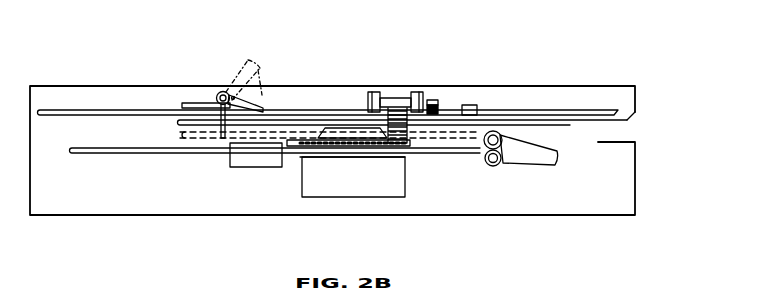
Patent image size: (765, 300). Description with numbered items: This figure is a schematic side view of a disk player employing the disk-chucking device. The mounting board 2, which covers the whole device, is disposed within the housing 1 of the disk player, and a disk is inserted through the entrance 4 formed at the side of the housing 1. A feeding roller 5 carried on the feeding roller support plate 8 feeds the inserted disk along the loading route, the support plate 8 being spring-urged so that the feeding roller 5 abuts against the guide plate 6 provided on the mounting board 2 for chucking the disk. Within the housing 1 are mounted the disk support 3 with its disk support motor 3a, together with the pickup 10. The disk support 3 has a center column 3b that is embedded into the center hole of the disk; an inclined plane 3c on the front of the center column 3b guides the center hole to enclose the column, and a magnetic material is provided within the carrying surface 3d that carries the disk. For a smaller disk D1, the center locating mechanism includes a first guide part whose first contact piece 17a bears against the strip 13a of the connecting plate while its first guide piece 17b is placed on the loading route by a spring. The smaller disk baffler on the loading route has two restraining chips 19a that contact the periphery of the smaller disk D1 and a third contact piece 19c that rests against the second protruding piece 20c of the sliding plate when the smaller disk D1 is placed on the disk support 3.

The housing 1 is at (636, 197).
The mounting board 2 is at (101, 110).
The disk support 3 is at (291, 144).
The disk support motor 3a is at (393, 193).
The center column 3b is at (318, 140).
The inclined plane 3c is at (325, 128).
The carrying surface 3d is at (297, 140).
The entrance 4 is at (617, 130).
The feeding roller 5 is at (484, 146).
The guide plate 6 is at (586, 123).
The feeding roller support plate 8 is at (536, 160).
The pickup 10 is at (229, 169).
The strip 13a is at (436, 108).
The first contact piece 17a is at (421, 92).
The first guide piece 17b is at (368, 98).
The restraining chips 19a is at (262, 105).
The third contact piece 19c is at (230, 92).
The second protruding piece 20c is at (214, 102).
The smaller disk D1 is at (465, 130).